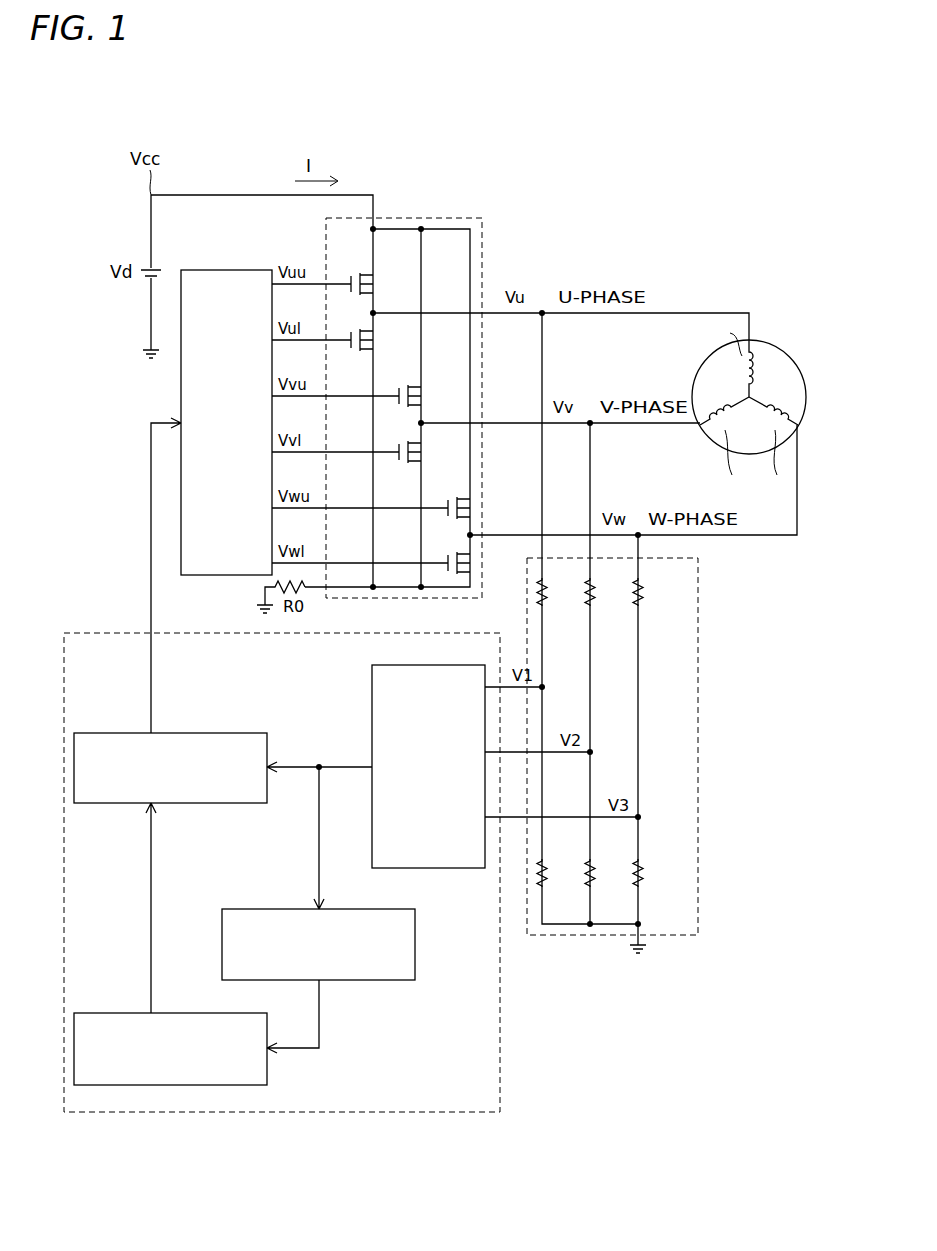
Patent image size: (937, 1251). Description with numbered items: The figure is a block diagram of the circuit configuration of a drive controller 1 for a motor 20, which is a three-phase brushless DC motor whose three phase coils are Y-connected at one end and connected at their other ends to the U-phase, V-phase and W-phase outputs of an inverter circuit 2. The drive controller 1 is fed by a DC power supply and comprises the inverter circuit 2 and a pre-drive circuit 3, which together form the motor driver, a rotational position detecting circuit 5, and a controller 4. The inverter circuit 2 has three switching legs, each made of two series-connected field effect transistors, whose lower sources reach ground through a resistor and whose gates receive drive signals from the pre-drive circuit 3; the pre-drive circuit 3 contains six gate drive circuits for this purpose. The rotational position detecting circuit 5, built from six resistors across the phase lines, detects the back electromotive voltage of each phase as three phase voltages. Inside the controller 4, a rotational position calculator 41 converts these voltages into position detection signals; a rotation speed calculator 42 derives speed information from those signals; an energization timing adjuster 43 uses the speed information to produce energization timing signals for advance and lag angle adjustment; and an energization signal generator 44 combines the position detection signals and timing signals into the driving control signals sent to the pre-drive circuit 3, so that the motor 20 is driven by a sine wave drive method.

The drive controller 1 is at (547, 226).
The inverter circuit 2 is at (445, 218).
The pre-drive circuit 3 is at (224, 270).
The controller 4 is at (306, 788).
The rotational position detecting circuit 5 is at (709, 680).
The motor 20 is at (768, 345).
The rotational position calculator 41 is at (430, 665).
The rotation speed calculator 42 is at (365, 909).
The energization timing adjuster 43 is at (165, 1013).
The energization signal generator 44 is at (222, 733).